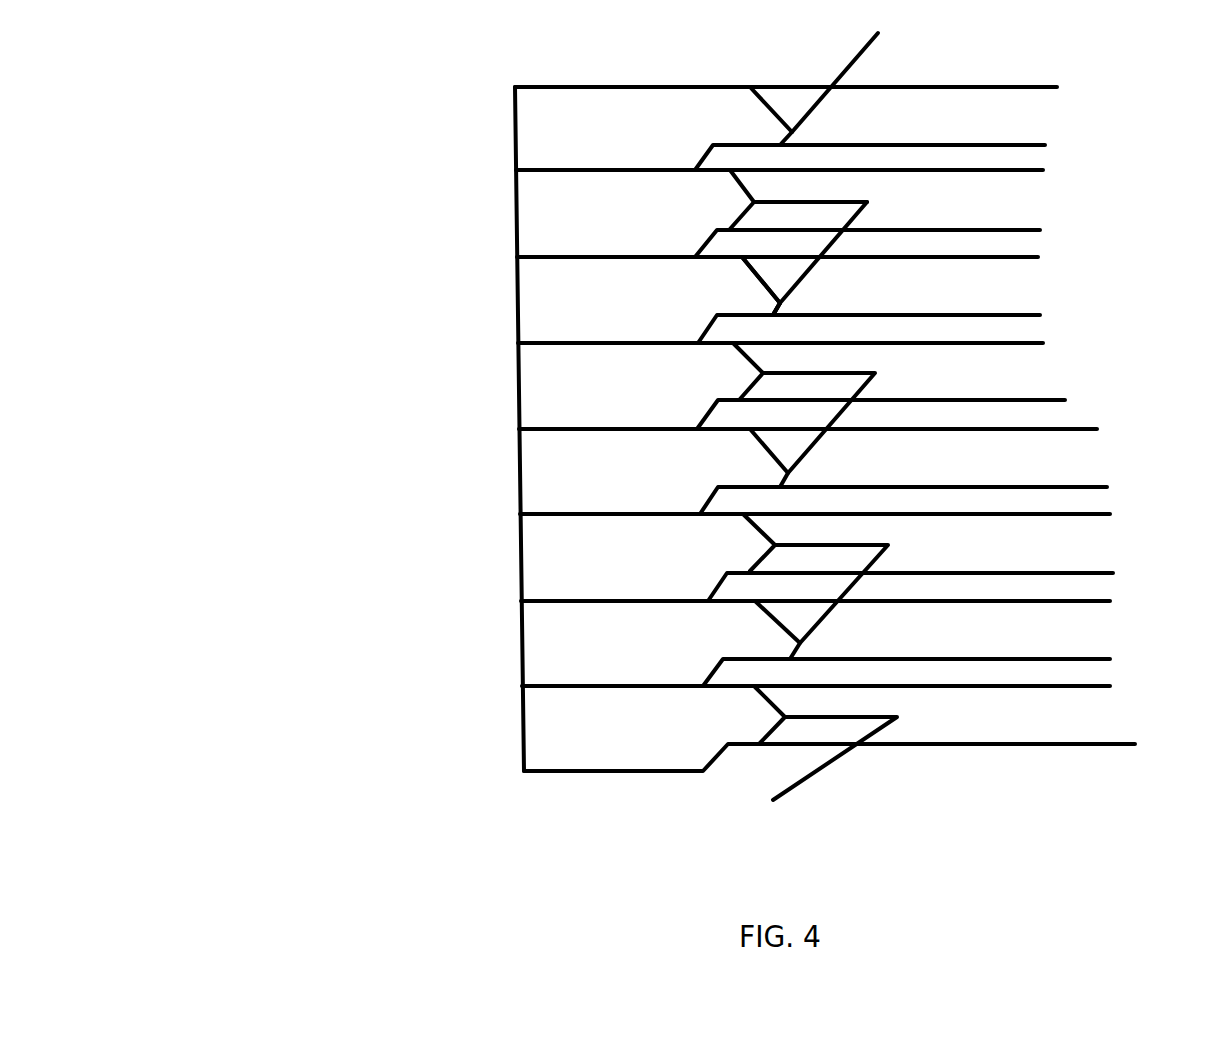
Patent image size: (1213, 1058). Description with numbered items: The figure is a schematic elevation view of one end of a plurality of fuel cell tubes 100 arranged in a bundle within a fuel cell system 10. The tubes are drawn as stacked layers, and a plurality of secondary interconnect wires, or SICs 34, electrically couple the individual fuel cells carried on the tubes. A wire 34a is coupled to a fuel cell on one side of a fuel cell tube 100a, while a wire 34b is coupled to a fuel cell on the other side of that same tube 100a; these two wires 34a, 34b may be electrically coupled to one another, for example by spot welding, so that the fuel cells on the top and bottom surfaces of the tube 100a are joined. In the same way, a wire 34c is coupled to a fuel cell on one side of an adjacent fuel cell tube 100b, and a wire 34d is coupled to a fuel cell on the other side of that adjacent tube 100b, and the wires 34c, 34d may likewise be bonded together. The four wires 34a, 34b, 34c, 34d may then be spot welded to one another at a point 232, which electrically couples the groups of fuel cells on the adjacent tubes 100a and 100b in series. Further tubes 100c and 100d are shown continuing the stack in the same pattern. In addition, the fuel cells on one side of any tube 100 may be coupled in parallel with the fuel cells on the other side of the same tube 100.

The fuel cell system 10 is at (302, 145).
The fuel cell tube 100 is at (582, 143).
The fuel cell tube 100a is at (544, 213).
The adjacent fuel cell tube 100b is at (632, 332).
The third layer 100c is at (612, 563).
The fourth layer 100d is at (607, 738).
The secondary interconnect wires (SICs) 34 is at (901, 422).
The secondary interconnect wire 34a is at (757, 185).
The secondary interconnect wire 34b is at (733, 216).
The secondary interconnect wire 34c is at (747, 275).
The secondary interconnect wire 34d is at (788, 307).
The bonding point 232 is at (878, 203).